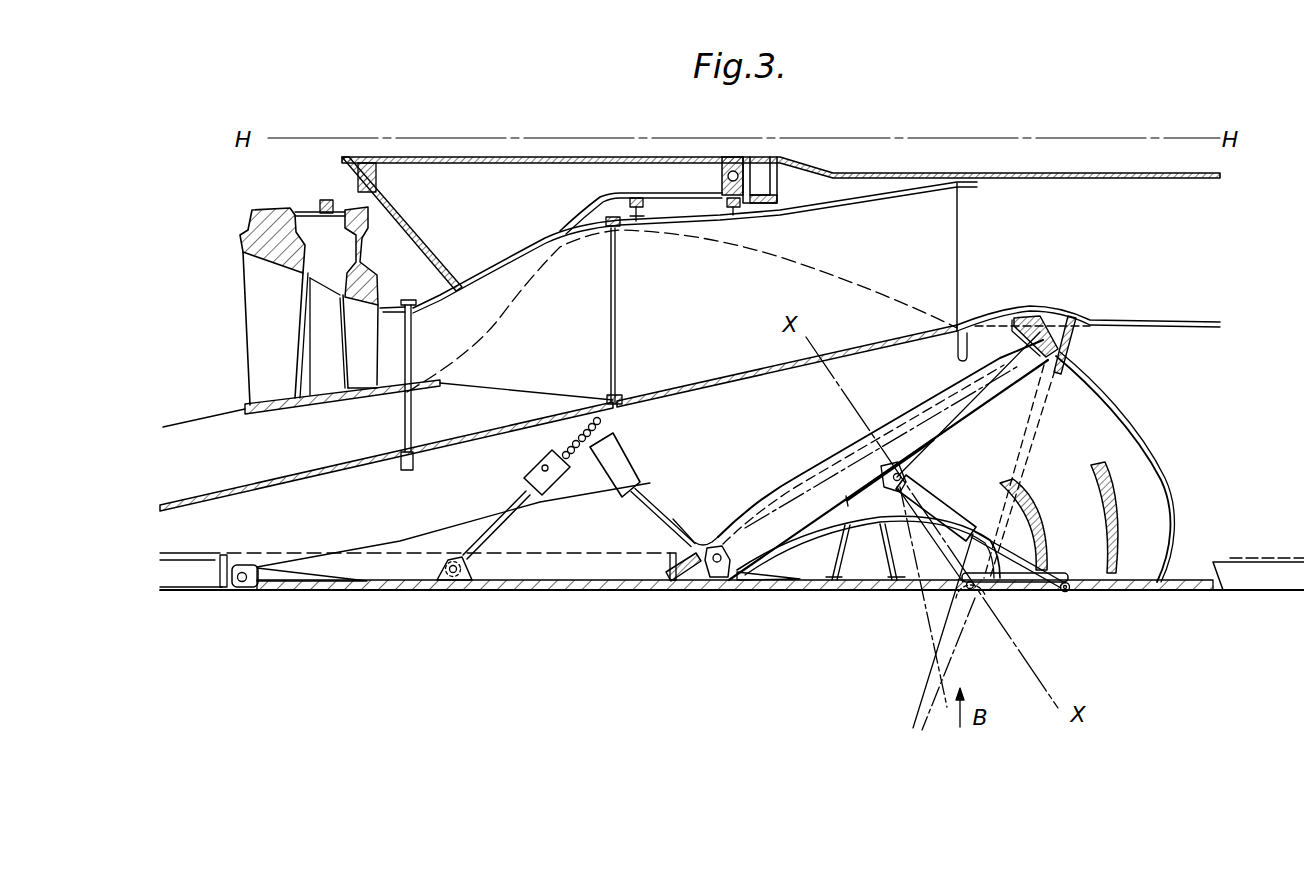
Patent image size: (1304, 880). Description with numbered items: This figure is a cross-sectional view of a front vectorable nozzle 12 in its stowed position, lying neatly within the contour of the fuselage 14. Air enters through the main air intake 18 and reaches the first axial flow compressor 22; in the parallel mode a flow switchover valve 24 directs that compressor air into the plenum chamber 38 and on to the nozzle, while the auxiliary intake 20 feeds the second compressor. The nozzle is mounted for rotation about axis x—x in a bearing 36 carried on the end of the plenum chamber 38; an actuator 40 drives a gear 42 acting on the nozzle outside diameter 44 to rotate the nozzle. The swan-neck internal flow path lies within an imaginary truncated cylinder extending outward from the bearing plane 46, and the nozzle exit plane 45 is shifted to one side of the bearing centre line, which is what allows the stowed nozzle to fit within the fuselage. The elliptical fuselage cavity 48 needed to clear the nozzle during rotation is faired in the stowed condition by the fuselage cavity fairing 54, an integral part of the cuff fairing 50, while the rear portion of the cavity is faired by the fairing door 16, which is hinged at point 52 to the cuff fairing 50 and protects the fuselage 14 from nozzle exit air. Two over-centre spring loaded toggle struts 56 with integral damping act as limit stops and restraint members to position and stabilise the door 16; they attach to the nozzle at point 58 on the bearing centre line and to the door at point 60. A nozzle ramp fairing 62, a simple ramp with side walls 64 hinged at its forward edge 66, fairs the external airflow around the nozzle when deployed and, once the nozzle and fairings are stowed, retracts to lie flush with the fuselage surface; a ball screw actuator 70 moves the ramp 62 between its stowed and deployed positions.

The vectorable front nozzle 12 is at (1130, 447).
The fuselage 14 is at (215, 591).
The fairing door 16 is at (1160, 591).
The main air intake 18 is at (185, 270).
The auxiliary intake 20 is at (315, 455).
The first axial flow compressor 22 is at (273, 318).
The flow switchover valve 24 is at (695, 268).
The bearing 36 is at (1040, 318).
The plenum chamber 38 is at (865, 368).
The actuator 40 is at (617, 472).
The gear 42 is at (683, 583).
The nozzle outside diameter 44 is at (716, 565).
The nozzle exit plane 45 is at (1137, 573).
The bearing plane 46 is at (775, 515).
The fuselage cavity 48 is at (1192, 497).
The cuff fairing 50 is at (1070, 353).
The hinge point 52 is at (976, 587).
The fuselage cavity fairing 54 is at (853, 590).
The toggle struts 56 is at (945, 503).
The strut attachment point on nozzle 58 is at (898, 470).
The strut attachment point on door 60 is at (1070, 591).
The nozzle ramp fairing 62 is at (597, 591).
The side walls 64 is at (542, 545).
The forward edge 66 is at (245, 590).
The ball screw actuator 70 is at (528, 466).